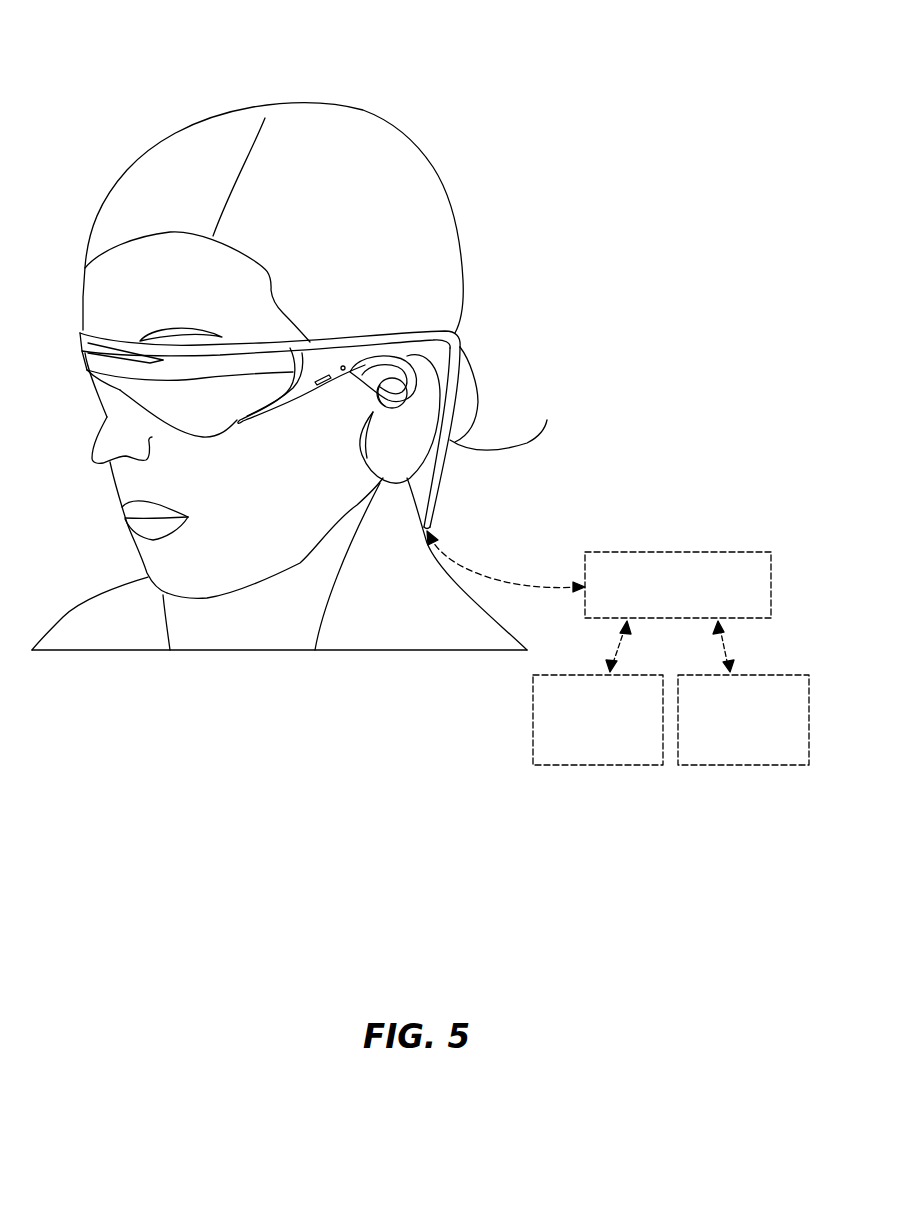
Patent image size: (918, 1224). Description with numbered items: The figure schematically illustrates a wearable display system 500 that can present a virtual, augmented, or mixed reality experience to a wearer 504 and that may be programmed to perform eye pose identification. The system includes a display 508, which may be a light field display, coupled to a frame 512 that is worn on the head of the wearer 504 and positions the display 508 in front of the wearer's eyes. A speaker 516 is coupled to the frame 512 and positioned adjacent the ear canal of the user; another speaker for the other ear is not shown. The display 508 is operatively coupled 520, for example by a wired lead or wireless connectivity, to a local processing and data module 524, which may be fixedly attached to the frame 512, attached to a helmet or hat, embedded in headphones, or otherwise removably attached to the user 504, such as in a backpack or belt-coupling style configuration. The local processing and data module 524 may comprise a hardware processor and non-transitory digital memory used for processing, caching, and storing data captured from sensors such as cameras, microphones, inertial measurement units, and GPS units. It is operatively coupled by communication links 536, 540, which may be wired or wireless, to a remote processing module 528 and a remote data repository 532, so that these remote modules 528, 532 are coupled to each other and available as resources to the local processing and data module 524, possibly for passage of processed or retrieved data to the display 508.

The wearable display system 500 is at (238, 52).
The wearer 504 is at (165, 142).
The display 508 is at (95, 388).
The frame 512 is at (343, 346).
The speaker 516 is at (407, 397).
The operative coupling 520 is at (452, 556).
The local processing and data module 524 is at (672, 552).
The remote processing module 528 is at (602, 766).
The remote data repository 532 is at (740, 766).
The communication link 536 is at (617, 641).
The communication link 540 is at (727, 653).